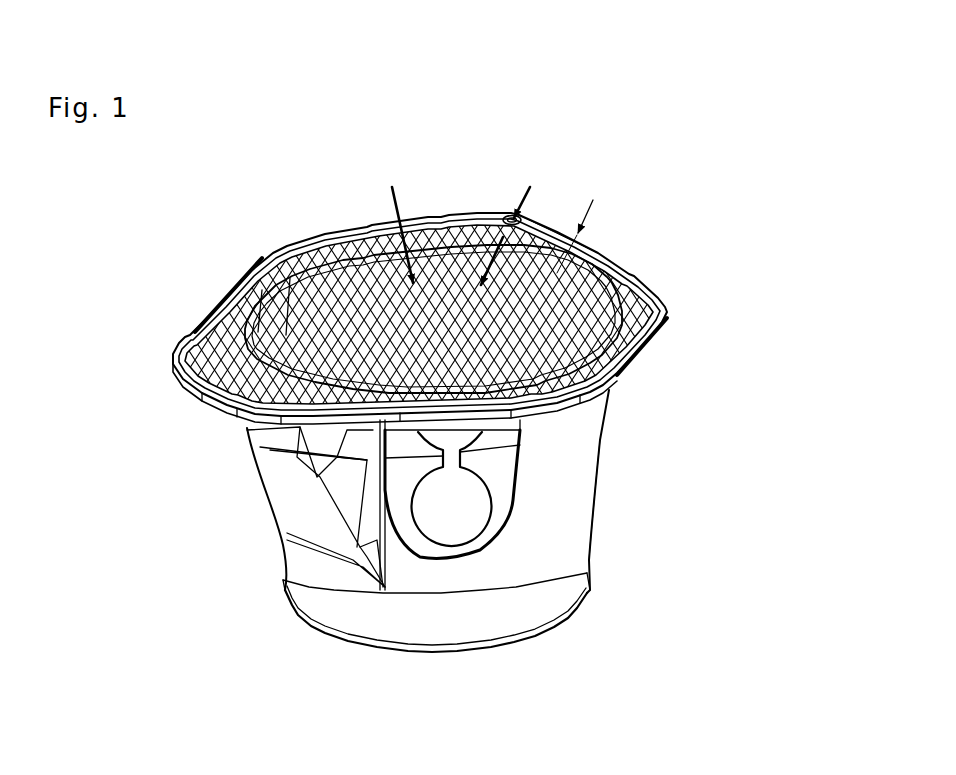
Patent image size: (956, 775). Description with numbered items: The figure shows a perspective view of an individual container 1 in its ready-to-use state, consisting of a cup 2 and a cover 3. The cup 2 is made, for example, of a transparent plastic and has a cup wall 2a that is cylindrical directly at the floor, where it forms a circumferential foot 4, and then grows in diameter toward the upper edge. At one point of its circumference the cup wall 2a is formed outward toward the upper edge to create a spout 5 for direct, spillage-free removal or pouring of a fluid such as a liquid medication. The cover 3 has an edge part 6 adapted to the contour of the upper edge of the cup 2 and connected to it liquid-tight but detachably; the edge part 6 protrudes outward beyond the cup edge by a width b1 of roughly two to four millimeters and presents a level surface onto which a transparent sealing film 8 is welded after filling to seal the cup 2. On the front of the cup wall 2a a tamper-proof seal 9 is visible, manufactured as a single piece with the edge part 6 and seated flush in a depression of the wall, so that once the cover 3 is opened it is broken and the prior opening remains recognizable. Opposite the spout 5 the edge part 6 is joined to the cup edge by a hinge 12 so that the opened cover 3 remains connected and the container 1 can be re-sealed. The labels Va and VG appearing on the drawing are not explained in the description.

The individual container 1 is at (185, 333).
The cup 2 is at (632, 432).
The cup wall 2a is at (548, 532).
The cover 3 is at (553, 223).
The circumferential foot 4 is at (340, 643).
The spout 5 is at (255, 447).
The edge part 6 is at (645, 283).
The sealing film 8 is at (398, 232).
The tamper-proof seal 9 is at (505, 537).
The hinge 12 is at (512, 213).
The width of the edge part b1 is at (600, 258).
The air velocity Va is at (402, 229).
The gas velocity VG is at (515, 231).